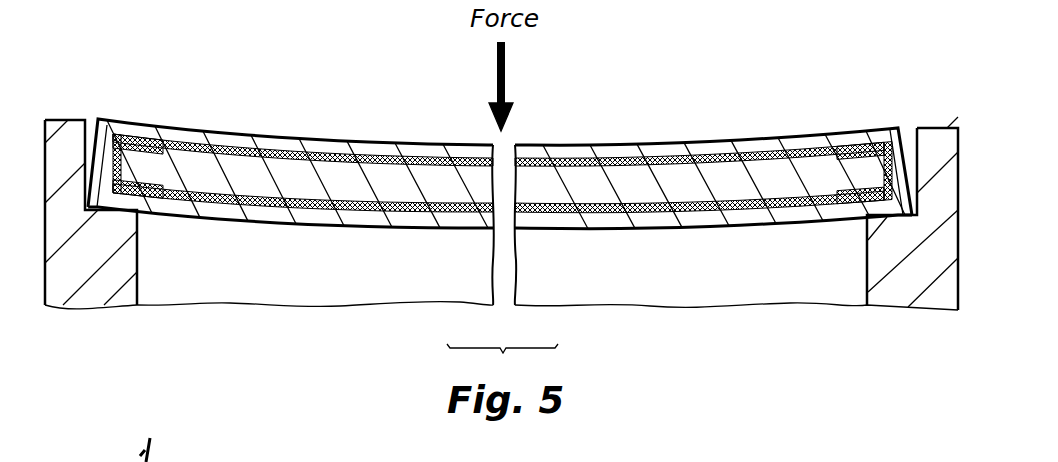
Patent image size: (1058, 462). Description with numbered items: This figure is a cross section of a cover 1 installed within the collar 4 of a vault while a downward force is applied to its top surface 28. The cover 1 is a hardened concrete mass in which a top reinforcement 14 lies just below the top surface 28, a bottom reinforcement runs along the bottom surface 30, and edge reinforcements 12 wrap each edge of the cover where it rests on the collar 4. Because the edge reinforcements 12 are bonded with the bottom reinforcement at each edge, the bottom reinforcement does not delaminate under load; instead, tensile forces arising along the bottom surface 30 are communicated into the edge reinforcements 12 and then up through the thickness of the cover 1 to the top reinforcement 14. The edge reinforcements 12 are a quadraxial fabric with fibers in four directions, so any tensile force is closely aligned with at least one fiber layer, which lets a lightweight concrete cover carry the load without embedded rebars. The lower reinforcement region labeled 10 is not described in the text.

The cover 1 is at (298, 95).
The collar 4 is at (85, 285).
The lower interlayer / bottom glass layer 10 is at (690, 205).
The edge reinforcement 12 is at (104, 148).
The top reinforcement 14 is at (210, 140).
The top surface 28 is at (370, 141).
The bottom surface 30 is at (357, 228).